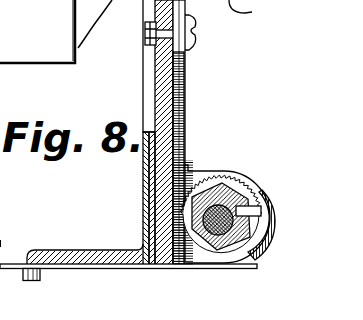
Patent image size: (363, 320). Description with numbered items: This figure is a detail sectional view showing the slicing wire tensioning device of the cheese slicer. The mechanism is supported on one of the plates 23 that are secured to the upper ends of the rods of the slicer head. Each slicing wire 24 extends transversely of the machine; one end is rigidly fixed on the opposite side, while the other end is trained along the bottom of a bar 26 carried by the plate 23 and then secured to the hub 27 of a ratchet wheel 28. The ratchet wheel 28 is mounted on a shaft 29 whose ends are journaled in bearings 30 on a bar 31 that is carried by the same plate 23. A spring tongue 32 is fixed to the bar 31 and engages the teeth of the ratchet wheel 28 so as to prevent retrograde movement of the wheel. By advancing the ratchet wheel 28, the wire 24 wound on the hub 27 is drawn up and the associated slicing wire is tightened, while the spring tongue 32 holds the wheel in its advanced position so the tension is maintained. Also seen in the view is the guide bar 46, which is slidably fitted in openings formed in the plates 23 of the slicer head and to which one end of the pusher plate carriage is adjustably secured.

The plate 23 is at (145, 58).
The slicing wire 24 is at (107, 268).
The bar 26 is at (82, 250).
The hub 27 is at (262, 207).
The ratchet wheel 28 is at (256, 258).
The shaft 29 is at (218, 233).
The bearing 30 is at (246, 174).
The bar 31 is at (184, 75).
The spring tongue 32 is at (180, 112).
The guide bar 46 is at (11, 221).